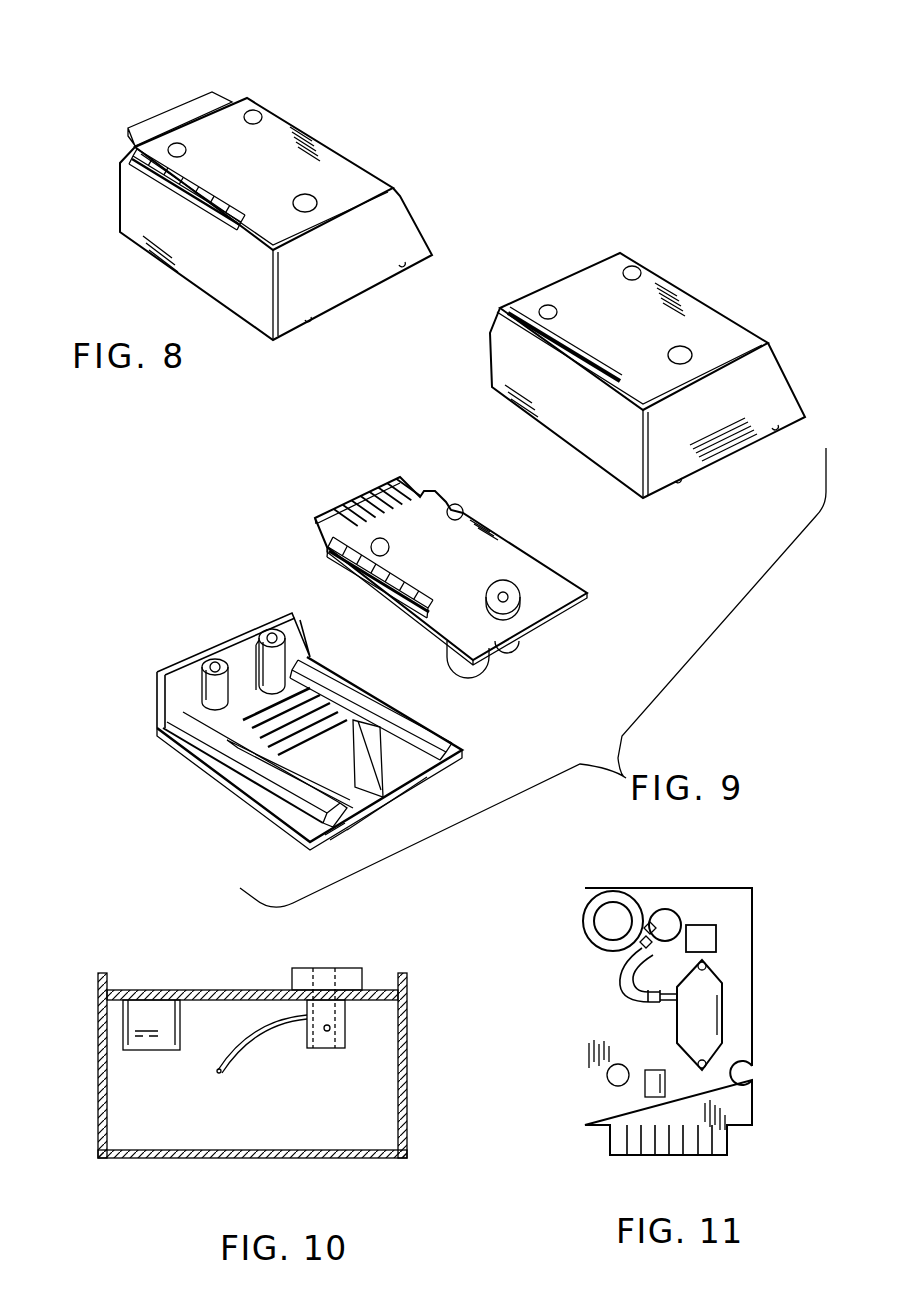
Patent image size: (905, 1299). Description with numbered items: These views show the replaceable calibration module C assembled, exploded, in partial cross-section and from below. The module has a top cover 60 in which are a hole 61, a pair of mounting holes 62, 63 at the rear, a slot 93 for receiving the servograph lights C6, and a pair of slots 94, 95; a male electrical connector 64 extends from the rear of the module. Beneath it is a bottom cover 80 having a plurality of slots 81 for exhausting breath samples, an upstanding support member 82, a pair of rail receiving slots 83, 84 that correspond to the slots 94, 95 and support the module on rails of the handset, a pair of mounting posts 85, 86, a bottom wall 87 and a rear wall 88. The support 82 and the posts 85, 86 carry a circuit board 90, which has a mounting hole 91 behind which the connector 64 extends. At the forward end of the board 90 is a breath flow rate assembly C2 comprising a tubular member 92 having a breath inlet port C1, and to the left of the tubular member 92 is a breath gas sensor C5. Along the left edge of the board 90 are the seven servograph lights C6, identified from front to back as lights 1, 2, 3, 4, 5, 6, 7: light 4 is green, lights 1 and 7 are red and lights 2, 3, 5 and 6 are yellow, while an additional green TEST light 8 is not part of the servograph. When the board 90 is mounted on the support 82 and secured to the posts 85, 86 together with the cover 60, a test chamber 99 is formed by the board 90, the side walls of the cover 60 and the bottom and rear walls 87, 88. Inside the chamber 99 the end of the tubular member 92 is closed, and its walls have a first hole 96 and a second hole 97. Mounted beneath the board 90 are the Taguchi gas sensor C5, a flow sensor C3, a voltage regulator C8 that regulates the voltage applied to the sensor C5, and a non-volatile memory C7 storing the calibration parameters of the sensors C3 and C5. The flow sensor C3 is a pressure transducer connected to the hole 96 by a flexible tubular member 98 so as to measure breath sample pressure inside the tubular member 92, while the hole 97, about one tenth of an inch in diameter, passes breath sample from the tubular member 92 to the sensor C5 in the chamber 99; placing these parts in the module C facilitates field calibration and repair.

In FIG. 8, the top cover 60 is at (282, 219).
In FIG. 9, the top cover 60 is at (647, 365).
In FIG. 10, the top cover 60 is at (253, 1065).
In FIG. 8, the hole 61 is at (369, 180).
In FIG. 9, the hole 61 is at (728, 327).
In FIG. 9, the mounting hole 62 is at (524, 283).
In FIG. 9, the mounting hole 63 is at (661, 241).
In FIG. 8, the male electrical connector 64 is at (186, 85).
In FIG. 9, the male electrical connector 64 is at (356, 483).
In FIG. 11, the male electrical connector 64 is at (678, 1157).
In FIG. 9, the bottom cover 80 is at (309, 777).
In FIG. 9, the slots 81 is at (250, 761).
In FIG. 9, the upstanding support member 82 is at (372, 791).
In FIG. 9, the rail receiving slot 83 is at (330, 852).
In FIG. 9, the rail receiving slot 84 is at (391, 733).
In FIG. 9, the mounting post 85 is at (183, 659).
In FIG. 9, the mounting post 86 is at (248, 636).
In FIG. 9, the bottom wall 87 is at (243, 809).
In FIG. 10, the bottom wall 87 is at (252, 1176).
In FIG. 9, the rear wall 88 is at (193, 672).
In FIG. 9, the circuit board 90 is at (451, 571).
In FIG. 10, the circuit board 90 is at (252, 972).
In FIG. 11, the circuit board 90 is at (677, 1021).
In FIG. 9, the mounting hole 91 is at (478, 481).
In FIG. 11, the mounting hole 91 is at (765, 1078).
In FIG. 9, the tubular member 92 is at (557, 638).
In FIG. 10, the tubular member 92 is at (294, 993).
In FIG. 11, the tubular member 92 is at (716, 916).
In FIG. 9, the slot 93 is at (527, 344).
In FIG. 9, the slot 94 is at (708, 501).
In FIG. 9, the slot 95 is at (796, 453).
In FIG. 11, the first hole 96 is at (667, 891).
In FIG. 10, the second hole 97 is at (306, 1052).
In FIG. 11, the second hole 97 is at (601, 970).
In FIG. 10, the flexible tubular member 98 is at (252, 1042).
In FIG. 11, the flexible tubular member 98 is at (608, 981).
In FIG. 10, the test chamber 99 is at (183, 1121).
In FIG. 8, the replaceable calibration module C is at (355, 92).
In FIG. 9, the replaceable calibration module C is at (169, 508).
In FIG. 9, the breath inlet port C1 is at (556, 582).
In FIG. 10, the breath inlet port C1 is at (366, 945).
In FIG. 9, the breath flow rate assembly C2 is at (555, 680).
In FIG. 10, the breath flow rate assembly C2 is at (406, 959).
In FIG. 11, the breath flow rate assembly C2 is at (685, 901).
In FIG. 11, the flow sensor C3 is at (738, 1015).
In FIG. 9, the breath gas sensor C5 is at (491, 688).
In FIG. 10, the breath gas sensor C5 is at (151, 1025).
In FIG. 11, the breath gas sensor C5 is at (594, 895).
In FIG. 8, the servograph lights C6 is at (155, 189).
In FIG. 9, the servograph lights C6 is at (329, 558).
In FIG. 11, the non-volatile memory C7 is at (594, 1097).
In FIG. 11, the voltage regulator C8 is at (744, 927).
In FIG. 9, the light 1 is at (397, 643).
In FIG. 9, the light 2 is at (381, 628).
In FIG. 9, the light 3 is at (364, 613).
In FIG. 9, the light 4 is at (347, 601).
In FIG. 9, the light 5 is at (331, 588).
In FIG. 9, the light 6 is at (315, 574).
In FIG. 9, the light 7 is at (299, 561).
In FIG. 9, the TEST light 8 is at (414, 658).